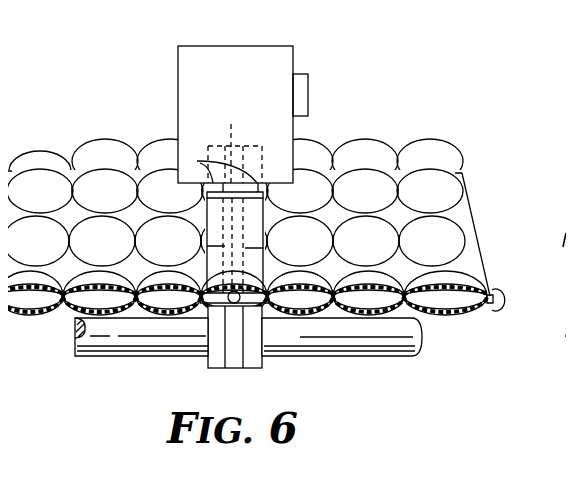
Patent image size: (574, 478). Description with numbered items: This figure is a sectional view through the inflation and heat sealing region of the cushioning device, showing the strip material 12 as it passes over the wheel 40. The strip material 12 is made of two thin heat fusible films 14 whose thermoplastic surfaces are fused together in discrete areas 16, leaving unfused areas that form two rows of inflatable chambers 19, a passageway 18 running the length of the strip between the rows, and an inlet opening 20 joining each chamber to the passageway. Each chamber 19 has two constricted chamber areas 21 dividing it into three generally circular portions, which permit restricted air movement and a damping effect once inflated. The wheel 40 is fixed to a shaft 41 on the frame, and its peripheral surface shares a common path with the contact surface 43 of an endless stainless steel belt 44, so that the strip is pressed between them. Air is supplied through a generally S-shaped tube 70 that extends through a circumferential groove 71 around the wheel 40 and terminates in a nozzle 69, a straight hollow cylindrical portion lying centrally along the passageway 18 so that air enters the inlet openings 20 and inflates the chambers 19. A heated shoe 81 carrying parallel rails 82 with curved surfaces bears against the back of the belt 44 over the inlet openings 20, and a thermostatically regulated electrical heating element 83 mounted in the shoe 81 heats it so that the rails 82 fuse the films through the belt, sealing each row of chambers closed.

The strip material 12 is at (268, 212).
The heat fusible films 14 is at (507, 298).
The fused discrete areas 16 is at (463, 260).
The passageway 18 is at (248, 302).
The inflatable chambers 19 is at (40, 190).
The inlet opening 20 is at (225, 234).
The constricted chamber areas 21 is at (382, 232).
The wheel 40 is at (207, 363).
The shaft 41 is at (350, 352).
The contact surface 43 is at (263, 195).
The endless belt 44 is at (206, 218).
The nozzle 69 is at (247, 303).
The S-shaped tube 70 is at (236, 142).
The circumferential groove 71 is at (228, 352).
The heated shoe 81 is at (288, 57).
The rails 82 is at (222, 164).
The electrical heating element 83 is at (305, 88).